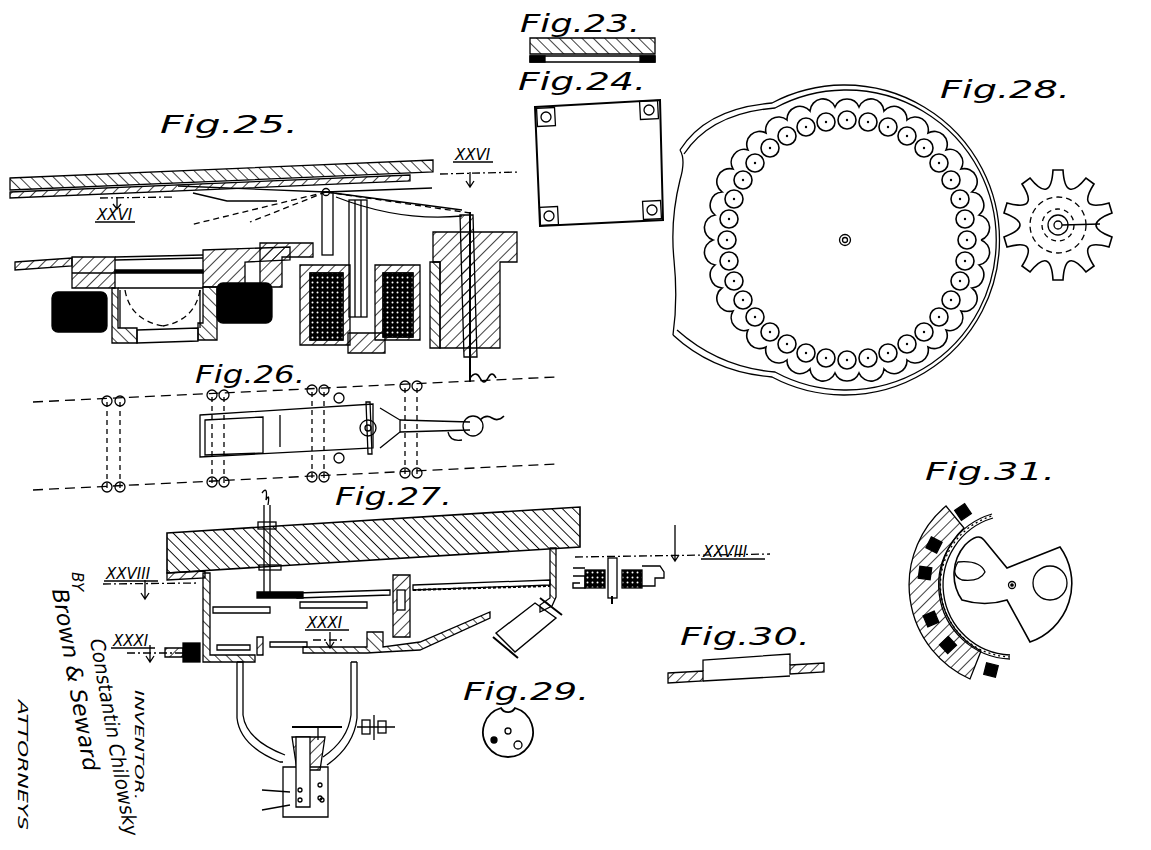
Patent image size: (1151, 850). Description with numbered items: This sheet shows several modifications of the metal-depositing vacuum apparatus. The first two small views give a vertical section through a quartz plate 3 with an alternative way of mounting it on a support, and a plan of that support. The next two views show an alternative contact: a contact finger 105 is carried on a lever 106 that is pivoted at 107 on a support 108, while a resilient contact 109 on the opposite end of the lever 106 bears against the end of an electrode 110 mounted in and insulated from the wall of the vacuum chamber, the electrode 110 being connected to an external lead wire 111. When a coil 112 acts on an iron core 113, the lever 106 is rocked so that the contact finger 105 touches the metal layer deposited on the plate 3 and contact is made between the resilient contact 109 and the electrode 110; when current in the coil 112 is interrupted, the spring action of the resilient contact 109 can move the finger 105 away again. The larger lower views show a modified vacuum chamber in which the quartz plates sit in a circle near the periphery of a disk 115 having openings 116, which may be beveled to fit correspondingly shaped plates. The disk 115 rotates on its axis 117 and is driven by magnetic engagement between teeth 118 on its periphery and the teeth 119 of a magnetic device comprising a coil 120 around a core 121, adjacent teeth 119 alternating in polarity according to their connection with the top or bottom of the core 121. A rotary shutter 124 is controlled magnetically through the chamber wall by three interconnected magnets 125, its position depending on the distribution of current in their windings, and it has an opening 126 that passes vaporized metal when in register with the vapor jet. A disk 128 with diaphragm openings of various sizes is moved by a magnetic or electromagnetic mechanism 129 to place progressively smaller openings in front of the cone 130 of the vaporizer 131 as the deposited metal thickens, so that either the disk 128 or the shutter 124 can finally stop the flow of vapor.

In FIG. 25, the plate 3 is at (165, 183).
In FIG. 26, the plate 3 is at (237, 436).
In FIG. 25, the contact finger 105 is at (215, 199).
In FIG. 26, the contact finger 105 is at (202, 416).
In FIG. 25, the lever 106 is at (268, 184).
In FIG. 26, the lever 106 is at (290, 450).
In FIG. 25, the pivot 107 is at (326, 188).
In FIG. 26, the pivot 107 is at (366, 419).
In FIG. 25, the support 108 is at (326, 224).
In FIG. 26, the support 108 is at (343, 395).
In FIG. 25, the resilient contact 109 is at (437, 195).
In FIG. 26, the resilient contact 109 is at (467, 441).
In FIG. 25, the electrode 110 is at (475, 218).
In FIG. 26, the electrode 110 is at (484, 424).
In FIG. 25, the external lead wire 111 is at (494, 376).
In FIG. 25, the coil 112 is at (431, 313).
In FIG. 25, the iron core 113 is at (366, 226).
In FIG. 26, the iron core 113 is at (372, 426).
In FIG. 27, the disk 115 is at (423, 583).
In FIG. 28, the disk 115 is at (836, 240).
In FIG. 27, the openings 116 is at (481, 577).
In FIG. 28, the openings 116 is at (740, 250).
In FIG. 27, the axis 117 is at (397, 577).
In FIG. 28, the axis 117 is at (845, 234).
In FIG. 28, the teeth 118 is at (985, 297).
In FIG. 27, the teeth 119 is at (655, 575).
In FIG. 28, the teeth 119 is at (1058, 237).
In FIG. 27, the coil 120 is at (620, 567).
In FIG. 28, the coil 120 is at (1060, 200).
In FIG. 27, the core 121 is at (612, 592).
In FIG. 28, the core 121 is at (1100, 224).
In FIG. 27, the rotary shutter 124 is at (240, 642).
In FIG. 31, the rotary shutter 124 is at (1048, 622).
In FIG. 27, the magnets 125 is at (175, 655).
In FIG. 31, the magnets 125 is at (935, 545).
In FIG. 27, the opening 126 is at (285, 650).
In FIG. 31, the opening 126 is at (1068, 583).
In FIG. 27, the disk 128 is at (307, 727).
In FIG. 29, the disk 128 is at (533, 728).
In FIG. 27, the magnetic or electromagnetic mechanism 129 is at (388, 722).
In FIG. 27, the cone 130 is at (300, 757).
In FIG. 27, the vaporizer 131 is at (325, 780).